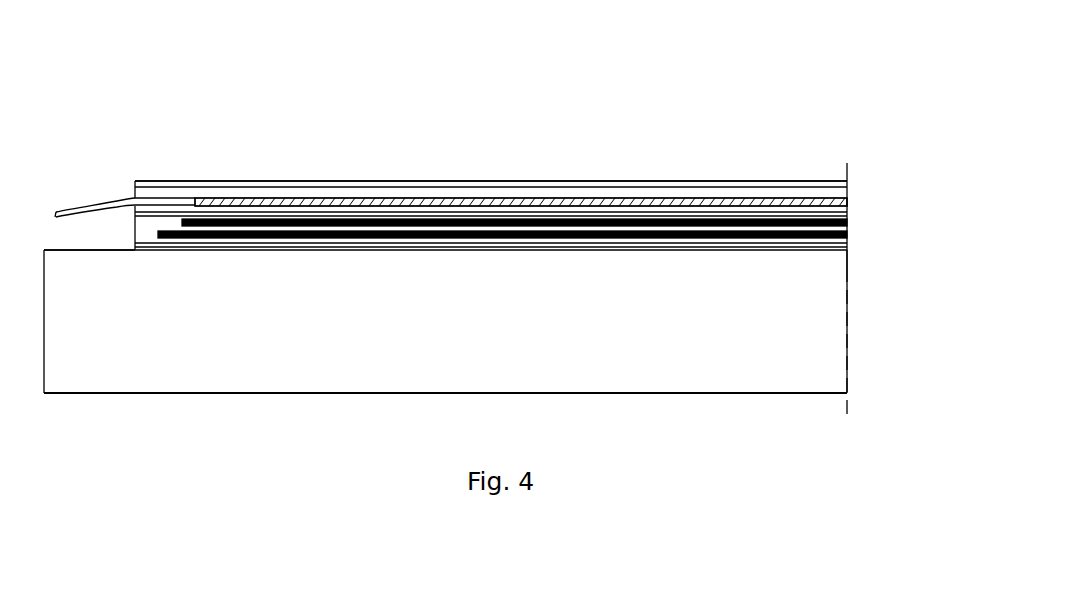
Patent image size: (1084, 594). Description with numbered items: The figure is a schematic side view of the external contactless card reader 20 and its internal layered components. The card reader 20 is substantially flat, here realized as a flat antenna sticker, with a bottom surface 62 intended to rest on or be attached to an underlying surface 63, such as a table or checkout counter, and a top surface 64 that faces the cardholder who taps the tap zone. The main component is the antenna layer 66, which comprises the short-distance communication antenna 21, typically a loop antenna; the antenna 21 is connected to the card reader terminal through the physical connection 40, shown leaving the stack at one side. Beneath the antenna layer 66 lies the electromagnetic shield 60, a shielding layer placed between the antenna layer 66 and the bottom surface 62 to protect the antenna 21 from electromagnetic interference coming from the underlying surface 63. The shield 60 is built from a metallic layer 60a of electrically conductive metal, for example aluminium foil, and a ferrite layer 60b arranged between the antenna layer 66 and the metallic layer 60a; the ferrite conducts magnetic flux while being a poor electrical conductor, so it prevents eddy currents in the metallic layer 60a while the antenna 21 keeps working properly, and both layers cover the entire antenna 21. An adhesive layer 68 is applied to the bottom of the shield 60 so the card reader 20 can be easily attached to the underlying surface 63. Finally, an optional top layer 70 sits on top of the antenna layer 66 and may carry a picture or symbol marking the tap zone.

The external contactless card reader 20 is at (501, 233).
The short-distance communication antenna 21 is at (503, 192).
The physical connection 40 is at (116, 186).
The electromagnetic shield 60 is at (542, 282).
The metallic layer 60a is at (281, 252).
The ferrite layer 60b is at (372, 238).
The bottom surface 62 is at (486, 262).
The underlying surface 63 is at (107, 262).
The top surface 64 is at (338, 176).
The antenna layer 66 is at (862, 202).
The adhesive layer 68 is at (862, 247).
The top layer 70 is at (862, 185).